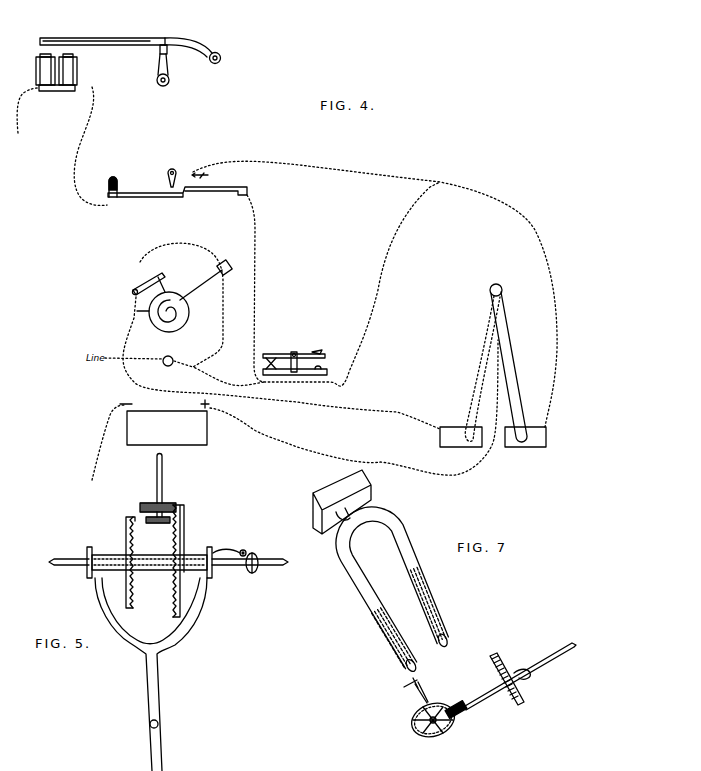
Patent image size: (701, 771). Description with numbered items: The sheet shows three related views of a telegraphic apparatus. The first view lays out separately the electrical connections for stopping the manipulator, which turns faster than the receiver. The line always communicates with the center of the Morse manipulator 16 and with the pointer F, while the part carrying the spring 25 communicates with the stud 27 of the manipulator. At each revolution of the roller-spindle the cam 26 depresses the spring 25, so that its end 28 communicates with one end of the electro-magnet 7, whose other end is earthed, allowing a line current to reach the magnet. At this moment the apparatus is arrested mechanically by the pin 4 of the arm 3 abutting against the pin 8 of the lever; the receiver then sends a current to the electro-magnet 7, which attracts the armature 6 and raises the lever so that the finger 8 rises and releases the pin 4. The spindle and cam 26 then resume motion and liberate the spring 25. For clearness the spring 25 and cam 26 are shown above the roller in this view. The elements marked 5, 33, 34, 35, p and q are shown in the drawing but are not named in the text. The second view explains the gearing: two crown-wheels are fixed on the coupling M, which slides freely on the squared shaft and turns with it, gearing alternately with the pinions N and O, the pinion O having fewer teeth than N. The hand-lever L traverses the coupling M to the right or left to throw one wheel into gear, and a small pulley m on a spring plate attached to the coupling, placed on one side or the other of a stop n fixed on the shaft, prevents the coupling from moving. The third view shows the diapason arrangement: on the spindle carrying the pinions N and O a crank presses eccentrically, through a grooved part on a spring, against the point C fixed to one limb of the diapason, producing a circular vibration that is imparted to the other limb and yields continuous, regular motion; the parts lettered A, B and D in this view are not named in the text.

In FIG. 5, the arm 3 is at (168, 556).
In FIG. 4, the pin 4 is at (165, 70).
In FIG. 4, the curved arm 5 is at (193, 47).
In FIG. 4, the armature 6 is at (102, 36).
In FIG. 4, the electro-magnet 7 is at (56, 72).
In FIG. 4, the pin 8 is at (168, 49).
In FIG. 4, the Morse manipulator 16 is at (294, 356).
In FIG. 4, the spring 25 is at (177, 193).
In FIG. 4, the cam 26 is at (193, 171).
In FIG. 4, the stud 27 is at (296, 364).
In FIG. 4, the end of spring 28 is at (319, 347).
In FIG. 4, the line connection 33 is at (141, 304).
In FIG. 4, the cam arm 34 is at (206, 280).
In FIG. 4, the terminal 35 is at (168, 355).
In FIG. 4, the end of diapason C is at (169, 313).
In FIG. 7, the end of diapason C is at (408, 679).
In FIG. 4, the pointer F is at (154, 284).
In FIG. 4, the hand-lever L is at (508, 363).
In FIG. 5, the hand-lever L is at (151, 674).
In FIG. 5, the pinion N is at (158, 483).
In FIG. 5, the pinion O is at (158, 523).
In FIG. 5, the coupling M is at (149, 562).
In FIG. 5, the small pulley m is at (229, 547).
In FIG. 5, the stop n is at (254, 562).
In FIG. 5, the right frame bar p is at (183, 561).
In FIG. 5, the left frame bar q is at (124, 562).
In FIG. 7, the connecting rod A is at (424, 692).
In FIG. 7, the U-tube B is at (392, 606).
In FIG. 7, the ratchet wheel D is at (430, 720).